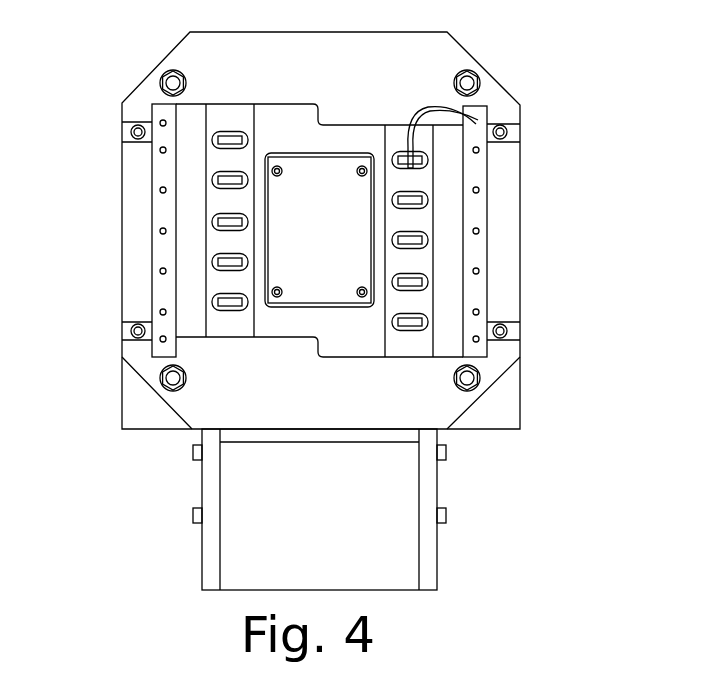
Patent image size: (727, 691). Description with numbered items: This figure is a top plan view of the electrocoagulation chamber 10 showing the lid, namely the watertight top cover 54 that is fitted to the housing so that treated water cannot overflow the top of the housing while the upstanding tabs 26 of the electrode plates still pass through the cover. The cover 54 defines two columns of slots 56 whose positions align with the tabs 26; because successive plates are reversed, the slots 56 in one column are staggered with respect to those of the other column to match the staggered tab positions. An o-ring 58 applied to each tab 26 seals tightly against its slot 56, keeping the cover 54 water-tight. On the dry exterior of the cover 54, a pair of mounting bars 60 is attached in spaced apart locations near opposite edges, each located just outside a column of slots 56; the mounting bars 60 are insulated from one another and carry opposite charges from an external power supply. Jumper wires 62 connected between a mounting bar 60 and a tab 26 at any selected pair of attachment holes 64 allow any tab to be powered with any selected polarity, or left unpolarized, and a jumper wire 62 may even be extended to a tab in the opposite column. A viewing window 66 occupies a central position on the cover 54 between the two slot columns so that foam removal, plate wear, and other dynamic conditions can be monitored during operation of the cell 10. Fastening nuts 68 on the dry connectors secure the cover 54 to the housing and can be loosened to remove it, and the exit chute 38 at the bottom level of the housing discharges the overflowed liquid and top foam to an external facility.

The electrocoagulation chamber 10 is at (98, 139).
The tab 26 is at (235, 180).
The exit chute 38 is at (265, 563).
The top cover 54 is at (497, 95).
The slots 56 is at (412, 320).
The o-ring 58 is at (213, 302).
The mounting bars 60 is at (160, 250).
The jumper wires 62 is at (420, 105).
The attachment holes 64 is at (160, 230).
The viewing window 66 is at (314, 240).
The fastening nuts 68 is at (186, 80).